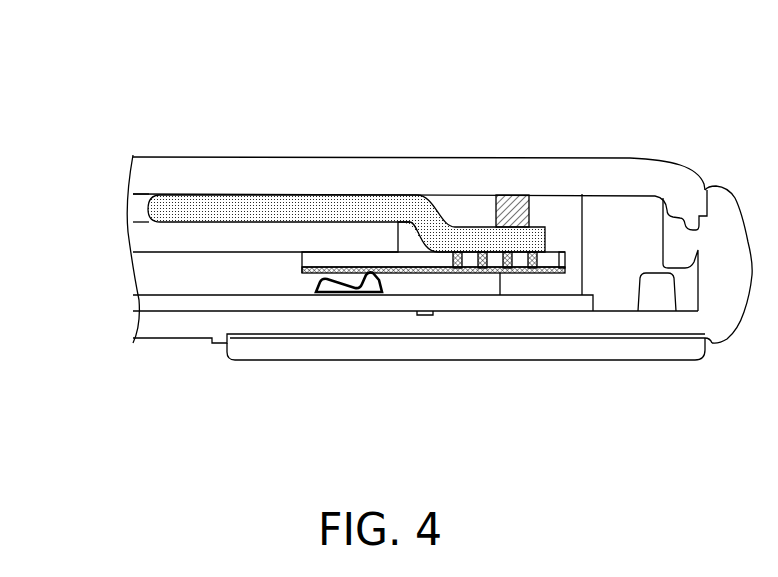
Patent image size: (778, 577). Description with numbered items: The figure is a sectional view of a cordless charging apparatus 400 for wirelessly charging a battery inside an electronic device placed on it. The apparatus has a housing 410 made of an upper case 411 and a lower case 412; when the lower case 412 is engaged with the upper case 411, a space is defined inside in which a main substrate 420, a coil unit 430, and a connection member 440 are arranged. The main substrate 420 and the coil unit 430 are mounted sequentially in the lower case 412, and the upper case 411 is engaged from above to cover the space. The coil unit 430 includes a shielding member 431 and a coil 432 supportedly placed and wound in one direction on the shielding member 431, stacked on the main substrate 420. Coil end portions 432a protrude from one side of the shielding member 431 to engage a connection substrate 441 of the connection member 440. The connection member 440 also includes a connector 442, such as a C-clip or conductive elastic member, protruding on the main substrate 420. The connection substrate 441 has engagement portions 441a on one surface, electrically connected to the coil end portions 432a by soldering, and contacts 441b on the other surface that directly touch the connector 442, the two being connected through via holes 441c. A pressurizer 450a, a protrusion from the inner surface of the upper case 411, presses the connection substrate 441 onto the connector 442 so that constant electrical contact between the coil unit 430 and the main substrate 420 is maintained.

The cordless charging apparatus 400 is at (124, 75).
The housing 410 is at (722, 83).
The upper case 411 is at (621, 178).
The lower case 412 is at (718, 197).
The main substrate 420 is at (145, 303).
The coil unit 430 is at (70, 197).
The shielding member 431 is at (145, 237).
The coil 432 is at (152, 206).
The coil end portions 432a is at (470, 227).
The connection member 440 is at (325, 412).
The connection substrate 441 is at (302, 258).
The engagement portions 441a is at (523, 248).
The contacts 441b is at (443, 273).
The via holes 441c is at (480, 273).
The connector 442 is at (316, 291).
The pressurizer 450a is at (503, 193).